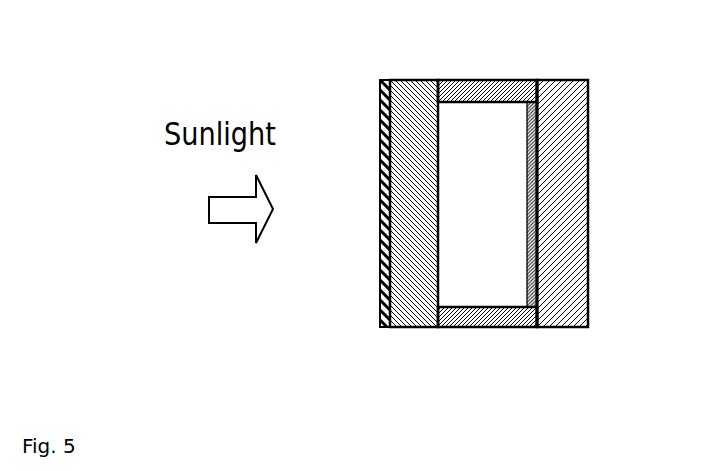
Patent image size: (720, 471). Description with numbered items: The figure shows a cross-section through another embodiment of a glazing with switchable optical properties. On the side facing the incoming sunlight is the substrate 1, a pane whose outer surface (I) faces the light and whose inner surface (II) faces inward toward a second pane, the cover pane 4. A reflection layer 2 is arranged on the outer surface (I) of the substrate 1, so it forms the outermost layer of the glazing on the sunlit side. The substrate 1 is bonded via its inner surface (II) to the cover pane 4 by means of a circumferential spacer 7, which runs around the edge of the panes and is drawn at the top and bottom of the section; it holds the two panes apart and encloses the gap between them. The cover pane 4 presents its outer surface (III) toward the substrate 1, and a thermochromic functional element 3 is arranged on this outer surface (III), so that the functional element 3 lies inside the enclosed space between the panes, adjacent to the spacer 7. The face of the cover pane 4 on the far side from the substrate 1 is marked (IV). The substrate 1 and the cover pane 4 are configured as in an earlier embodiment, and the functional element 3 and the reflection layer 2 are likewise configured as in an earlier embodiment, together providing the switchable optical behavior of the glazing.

The substrate 1 is at (413, 312).
The reflection layer 2 is at (386, 90).
The thermochromic functional element 3 is at (529, 222).
The cover pane 4 is at (560, 315).
The circumferential spacer 7 is at (520, 80).
The outer surface of the substrate I is at (382, 258).
The inner surface of the substrate II is at (430, 217).
The outer surface of the cover pane III is at (548, 107).
The fourth surface / interface IV is at (597, 159).